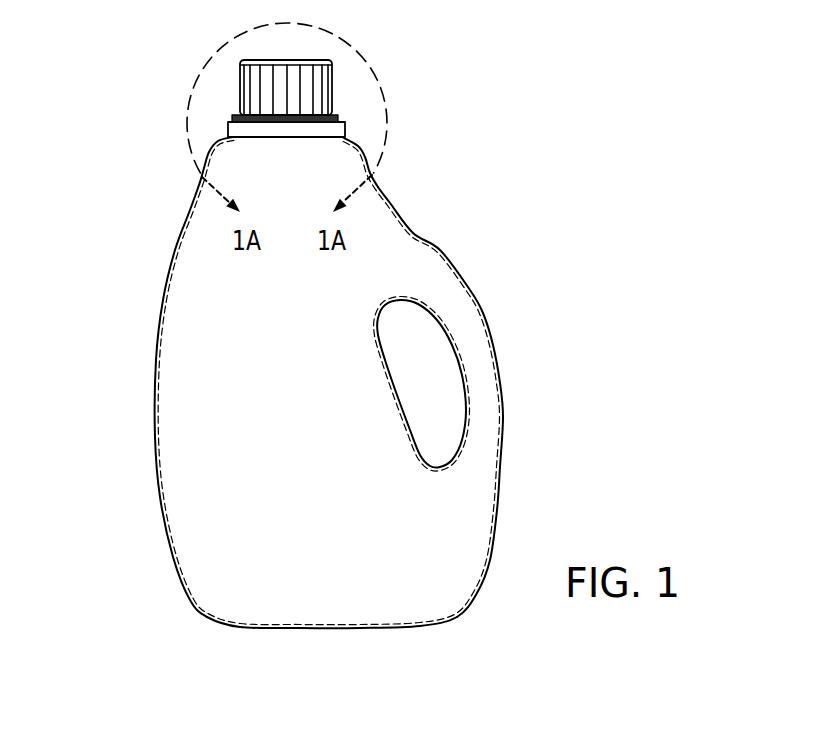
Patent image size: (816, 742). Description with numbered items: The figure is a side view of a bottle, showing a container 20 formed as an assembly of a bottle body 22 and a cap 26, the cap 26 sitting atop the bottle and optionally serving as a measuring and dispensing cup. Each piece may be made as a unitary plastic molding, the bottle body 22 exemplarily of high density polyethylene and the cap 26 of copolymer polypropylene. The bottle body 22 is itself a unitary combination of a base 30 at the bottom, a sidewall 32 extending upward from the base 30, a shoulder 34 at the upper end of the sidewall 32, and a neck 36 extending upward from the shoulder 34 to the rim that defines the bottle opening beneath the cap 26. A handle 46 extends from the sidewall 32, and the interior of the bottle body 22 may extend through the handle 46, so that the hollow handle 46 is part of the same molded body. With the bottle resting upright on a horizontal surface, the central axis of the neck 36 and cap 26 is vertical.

The container 20 is at (297, 378).
The bottle body 22 is at (462, 540).
The cap 26 is at (318, 93).
The base 30 is at (240, 630).
The sidewall 32 is at (160, 375).
The shoulder 34 is at (347, 137).
The neck 36 is at (312, 162).
The handle 46 is at (465, 333).